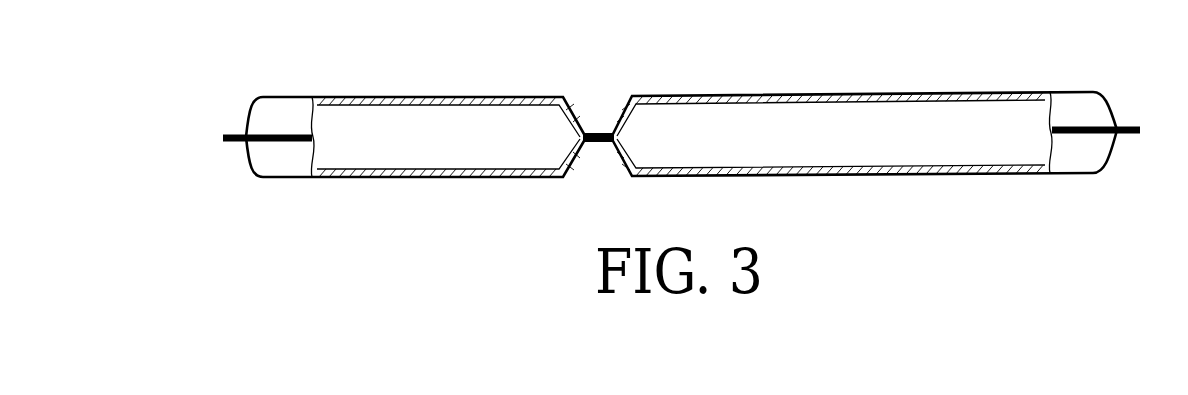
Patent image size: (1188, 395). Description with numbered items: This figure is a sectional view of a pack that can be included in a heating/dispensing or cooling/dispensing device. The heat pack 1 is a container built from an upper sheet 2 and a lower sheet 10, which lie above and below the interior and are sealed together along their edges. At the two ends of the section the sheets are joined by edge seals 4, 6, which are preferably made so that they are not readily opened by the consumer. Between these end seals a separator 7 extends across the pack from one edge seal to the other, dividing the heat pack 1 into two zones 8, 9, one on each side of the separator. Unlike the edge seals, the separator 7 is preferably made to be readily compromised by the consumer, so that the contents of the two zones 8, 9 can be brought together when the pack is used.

The heat pack 1 is at (186, 98).
The upper sheet 2 is at (435, 97).
The edge seal 4 is at (1127, 127).
The edge seal 6 is at (233, 143).
The separator 7 is at (598, 131).
The zone 8 is at (413, 148).
The zone 9 is at (858, 145).
The lower sheet 10 is at (473, 174).